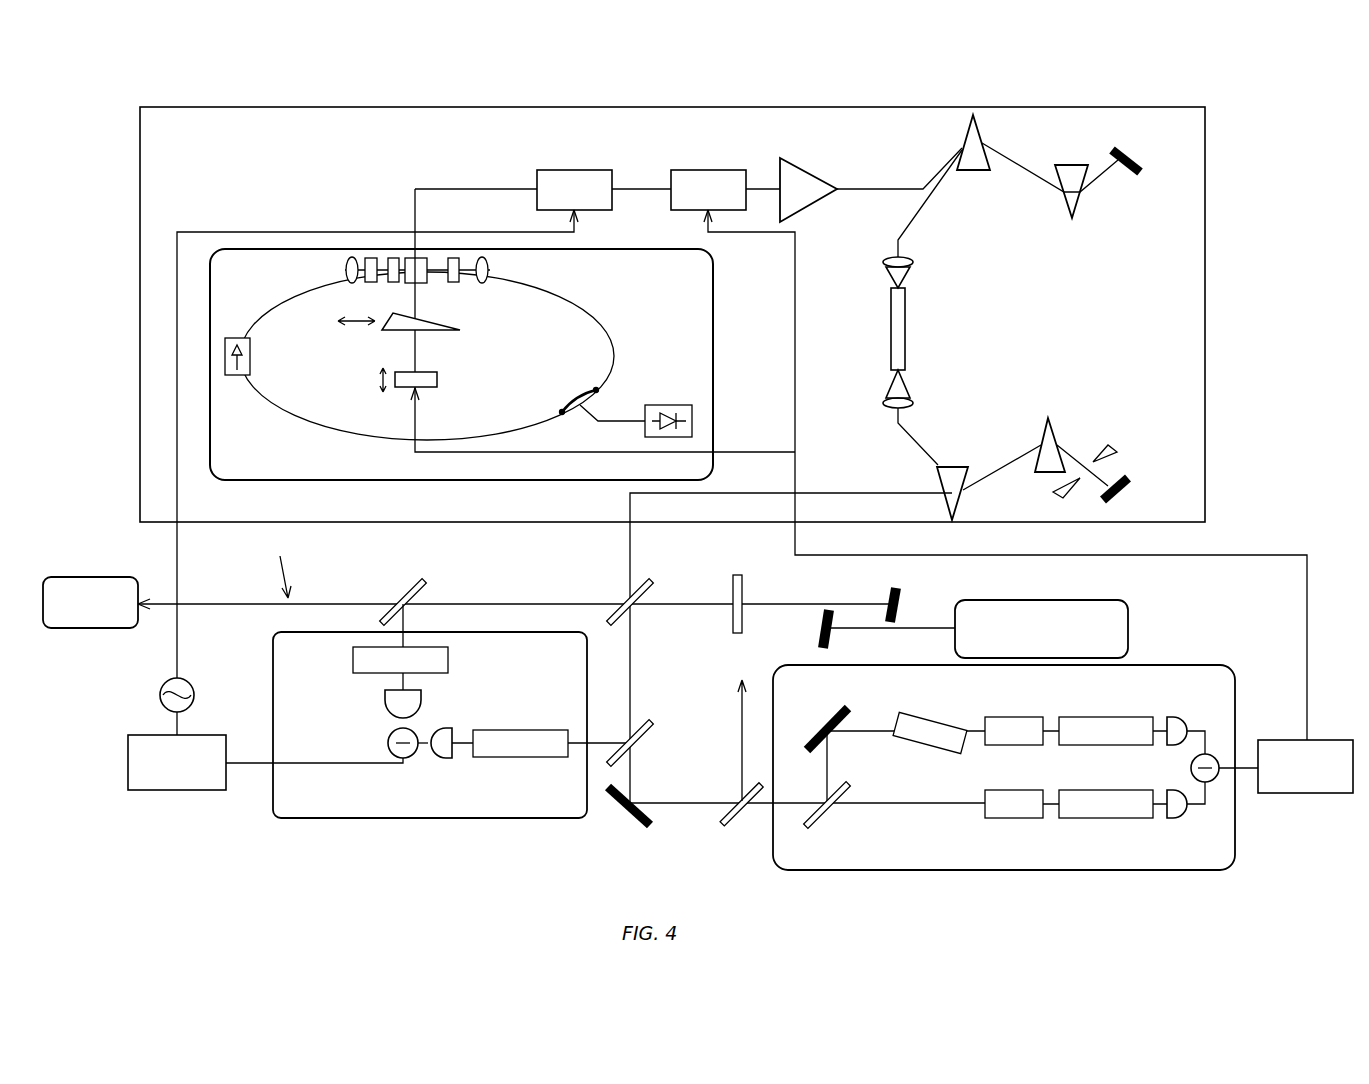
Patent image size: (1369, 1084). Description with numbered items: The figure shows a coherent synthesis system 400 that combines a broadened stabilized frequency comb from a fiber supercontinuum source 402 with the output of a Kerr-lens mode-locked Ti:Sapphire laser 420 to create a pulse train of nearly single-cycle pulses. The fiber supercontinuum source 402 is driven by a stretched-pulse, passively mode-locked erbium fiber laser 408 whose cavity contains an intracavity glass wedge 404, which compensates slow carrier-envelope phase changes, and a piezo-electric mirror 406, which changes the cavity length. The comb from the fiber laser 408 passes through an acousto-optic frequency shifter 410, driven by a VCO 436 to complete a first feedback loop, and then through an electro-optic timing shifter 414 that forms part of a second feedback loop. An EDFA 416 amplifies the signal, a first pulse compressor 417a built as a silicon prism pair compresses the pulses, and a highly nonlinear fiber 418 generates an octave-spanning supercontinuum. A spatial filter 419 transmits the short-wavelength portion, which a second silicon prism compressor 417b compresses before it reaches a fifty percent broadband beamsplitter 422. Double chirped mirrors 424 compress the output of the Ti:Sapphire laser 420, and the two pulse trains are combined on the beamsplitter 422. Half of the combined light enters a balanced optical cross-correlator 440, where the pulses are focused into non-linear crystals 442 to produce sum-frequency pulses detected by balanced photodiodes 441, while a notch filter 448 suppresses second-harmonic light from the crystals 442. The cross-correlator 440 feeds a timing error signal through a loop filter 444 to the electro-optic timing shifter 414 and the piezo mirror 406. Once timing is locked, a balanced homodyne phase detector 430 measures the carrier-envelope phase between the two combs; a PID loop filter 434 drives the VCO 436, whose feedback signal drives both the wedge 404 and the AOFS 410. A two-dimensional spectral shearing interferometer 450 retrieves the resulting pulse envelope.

The coherent synthesis system 400 is at (215, 860).
The fiber supercontinuum source 402 is at (1207, 235).
The intracavity glass wedge 404 is at (425, 327).
The piezo-electric mirror 406 is at (398, 388).
The erbium fiber laser 408 is at (290, 483).
The acousto-optic frequency shifter 410 is at (545, 170).
The electro-optic timing shifter 414 is at (678, 170).
The EDFA 416 is at (815, 212).
The first pulse compressor 417a is at (1083, 125).
The second silicon prism compressor 417b is at (1163, 475).
The highly nonlinear fiber 418 is at (905, 320).
The spatial filter 419 is at (1045, 445).
The Ti:Sapphire laser 420 is at (1128, 607).
The 50% broadband beamsplitter 422 is at (633, 574).
The double chirped mirrors 424 is at (818, 640).
The balanced homodyne phase detector 430 is at (273, 800).
The PID loop filter 434 is at (128, 760).
The VCO 436 is at (160, 693).
The balanced optical cross-correlator 440 is at (1215, 875).
The balanced photodiodes 441 is at (1185, 718).
The non-linear crystals 442 is at (995, 717).
The loop filter 444 is at (1300, 794).
The notch filter 448 is at (728, 808).
The two-dimensional spectral shearing interferometer 450 is at (112, 576).